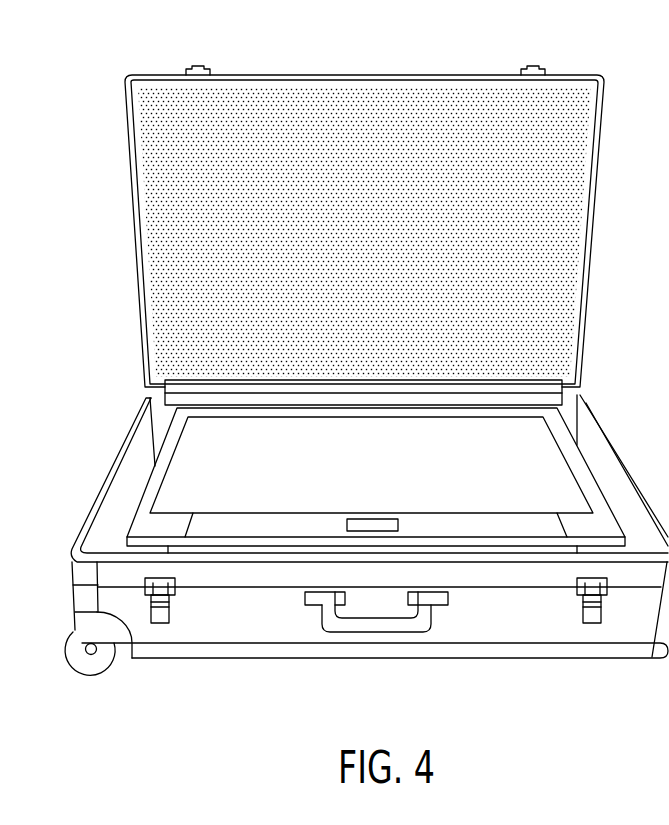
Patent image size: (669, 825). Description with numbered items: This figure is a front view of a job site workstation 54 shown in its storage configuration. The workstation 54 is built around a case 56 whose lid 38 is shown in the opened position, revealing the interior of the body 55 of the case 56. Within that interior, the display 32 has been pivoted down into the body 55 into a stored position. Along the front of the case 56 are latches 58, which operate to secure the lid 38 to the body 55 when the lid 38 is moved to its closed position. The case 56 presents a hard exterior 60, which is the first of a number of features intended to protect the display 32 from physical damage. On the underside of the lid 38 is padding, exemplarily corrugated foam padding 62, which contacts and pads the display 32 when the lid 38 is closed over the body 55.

The display 32 is at (357, 457).
The lid 38 is at (561, 73).
The job site workstation 54 is at (331, 203).
The body 55 is at (98, 498).
The case 56 is at (349, 544).
The latches 58 is at (168, 598).
The hard exterior 60 is at (295, 580).
The corrugated foam padding 62 is at (210, 267).